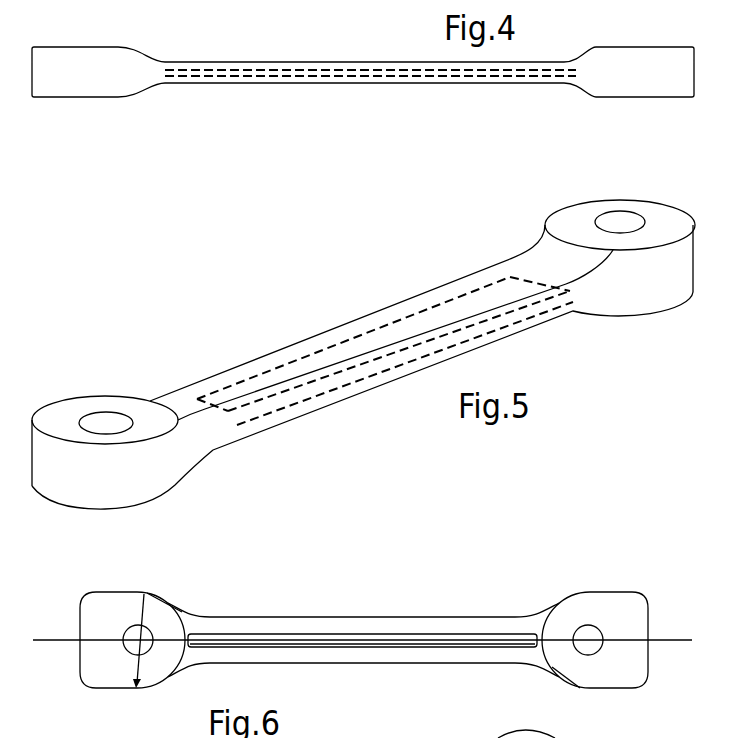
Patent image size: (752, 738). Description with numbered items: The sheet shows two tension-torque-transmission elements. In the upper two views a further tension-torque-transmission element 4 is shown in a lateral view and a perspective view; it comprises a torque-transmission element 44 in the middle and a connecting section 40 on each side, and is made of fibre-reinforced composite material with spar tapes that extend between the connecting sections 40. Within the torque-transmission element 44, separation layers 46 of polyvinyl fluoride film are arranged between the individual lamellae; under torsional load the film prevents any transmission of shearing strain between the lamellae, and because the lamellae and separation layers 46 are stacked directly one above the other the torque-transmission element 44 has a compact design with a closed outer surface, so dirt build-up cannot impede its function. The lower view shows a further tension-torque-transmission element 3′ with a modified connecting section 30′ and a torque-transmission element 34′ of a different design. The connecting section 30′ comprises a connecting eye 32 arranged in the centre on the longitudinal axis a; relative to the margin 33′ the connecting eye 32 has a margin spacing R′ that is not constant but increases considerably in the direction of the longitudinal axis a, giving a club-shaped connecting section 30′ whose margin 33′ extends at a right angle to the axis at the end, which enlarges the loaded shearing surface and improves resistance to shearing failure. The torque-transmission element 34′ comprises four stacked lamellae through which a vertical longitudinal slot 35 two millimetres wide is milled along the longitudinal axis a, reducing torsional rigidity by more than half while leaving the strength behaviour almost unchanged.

In FIG. 4, the tension-torque-transmission element 4 is at (238, 107).
In FIG. 5, the tension-torque-transmission element 4 is at (382, 286).
In FIG. 4, the connecting section 40 is at (96, 57).
In FIG. 5, the connecting section 40 is at (72, 400).
In FIG. 4, the torque-transmission element 44 is at (292, 70).
In FIG. 5, the torque-transmission element 44 is at (312, 343).
In FIG. 4, the separation layers 46 is at (413, 77).
In FIG. 5, the separation layers 46 is at (575, 302).
In FIG. 5, the connecting eye 32 is at (118, 412).
In FIG. 6, the connecting eye 32 is at (149, 594).
In FIG. 6, the connecting section 30′ is at (105, 590).
In FIG. 6, the margin 33′ is at (80, 652).
In FIG. 6, the torque-transmission element 34′ is at (275, 622).
In FIG. 6, the longitudinal slot 35 is at (435, 636).
In FIG. 6, the tension-torque-transmission element 3′ is at (360, 597).
In FIG. 6, the longitudinal axis a is at (666, 640).
In FIG. 6, the margin spacing R′ is at (125, 641).